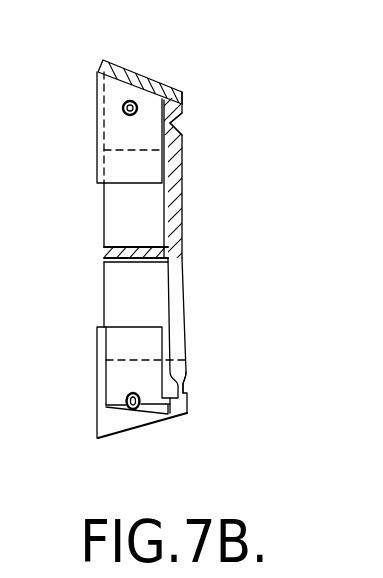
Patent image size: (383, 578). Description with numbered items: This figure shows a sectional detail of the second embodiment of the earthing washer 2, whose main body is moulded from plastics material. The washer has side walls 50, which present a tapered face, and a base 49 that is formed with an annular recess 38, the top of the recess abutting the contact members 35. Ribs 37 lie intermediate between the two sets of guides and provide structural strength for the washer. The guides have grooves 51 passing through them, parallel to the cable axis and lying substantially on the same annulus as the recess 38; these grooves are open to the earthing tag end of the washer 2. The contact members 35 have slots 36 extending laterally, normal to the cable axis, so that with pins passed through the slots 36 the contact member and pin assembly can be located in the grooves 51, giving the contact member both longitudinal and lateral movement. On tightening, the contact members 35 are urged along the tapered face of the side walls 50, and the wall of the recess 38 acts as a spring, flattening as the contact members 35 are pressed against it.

The earthing washer 2 is at (187, 338).
The contact member 35 is at (97, 372).
The slot 36 is at (187, 392).
The rib 37 is at (104, 259).
The annular recess 38 is at (180, 120).
The base 49 is at (183, 213).
The side wall 50 is at (160, 78).
The groove 51 is at (131, 410).